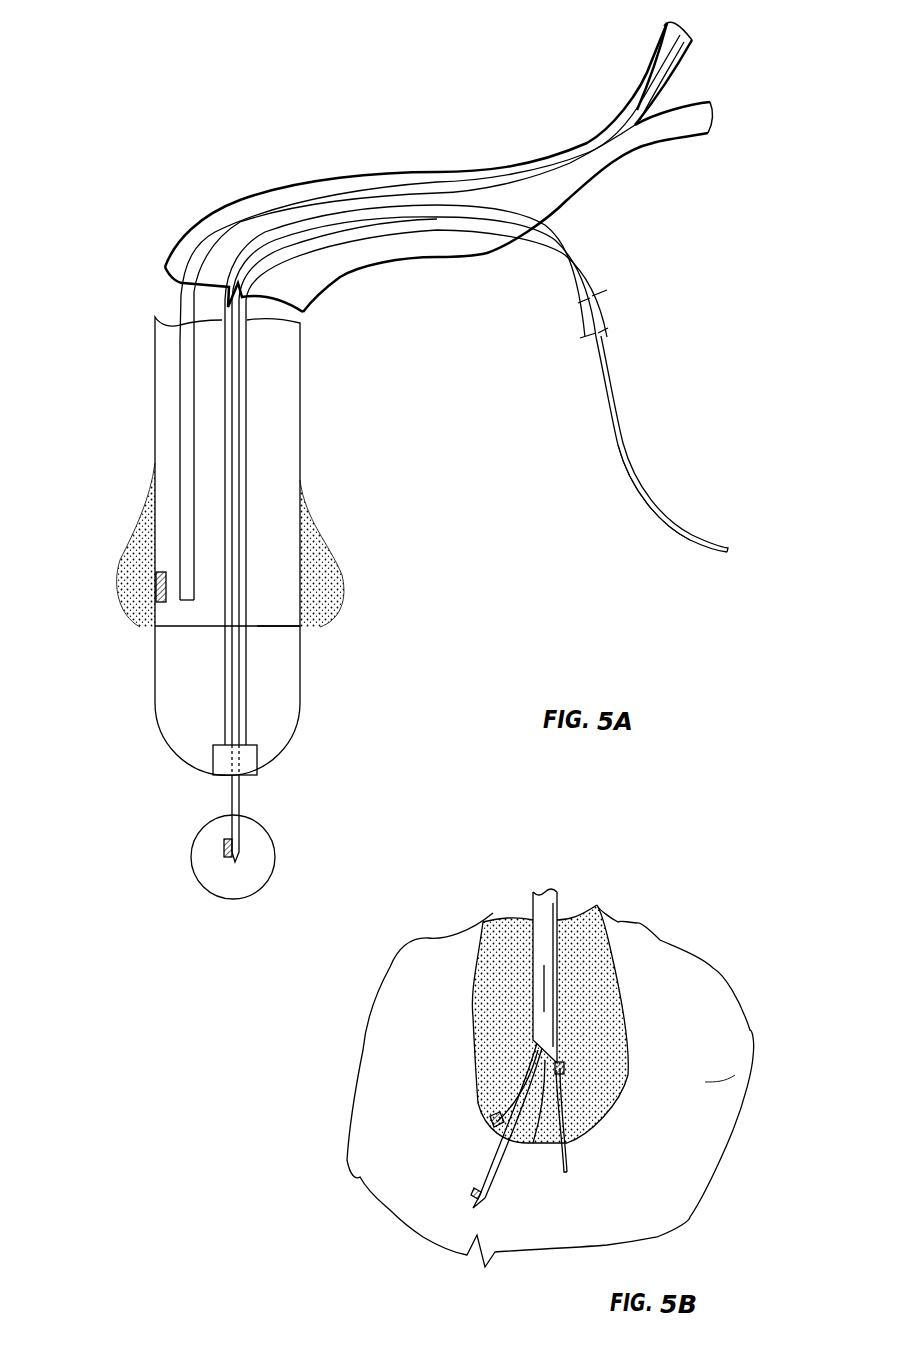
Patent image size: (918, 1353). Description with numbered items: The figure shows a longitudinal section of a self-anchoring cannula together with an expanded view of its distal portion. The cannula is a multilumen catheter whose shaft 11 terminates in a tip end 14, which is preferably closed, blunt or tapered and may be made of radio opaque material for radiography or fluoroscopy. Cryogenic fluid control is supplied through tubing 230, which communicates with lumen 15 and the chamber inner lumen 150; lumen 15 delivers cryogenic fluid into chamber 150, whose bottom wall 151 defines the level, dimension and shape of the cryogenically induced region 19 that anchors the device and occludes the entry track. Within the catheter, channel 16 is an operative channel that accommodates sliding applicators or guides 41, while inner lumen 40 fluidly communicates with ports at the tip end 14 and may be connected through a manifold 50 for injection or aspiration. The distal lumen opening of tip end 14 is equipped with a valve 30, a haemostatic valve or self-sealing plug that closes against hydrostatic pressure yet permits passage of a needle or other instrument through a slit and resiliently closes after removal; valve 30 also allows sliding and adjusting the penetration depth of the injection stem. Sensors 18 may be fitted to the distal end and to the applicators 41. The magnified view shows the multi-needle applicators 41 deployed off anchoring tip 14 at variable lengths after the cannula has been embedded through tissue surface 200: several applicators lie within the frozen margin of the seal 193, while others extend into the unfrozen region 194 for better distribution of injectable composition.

In FIG. 5A, the shaft 11 is at (154, 398).
In FIG. 5A, the tip end 14 is at (190, 718).
In FIG. 5A, the lumen 15 is at (178, 454).
In FIG. 5A, the operative channel 16 is at (247, 480).
In FIG. 5A, the sensors 18 is at (154, 594).
In FIG. 5B, the sensors 18 is at (542, 1058).
In FIG. 5A, the cryogenically induced region 19 is at (126, 561).
In FIG. 5A, the valve 30 is at (605, 320).
In FIG. 5A, the inner lumen 40 is at (607, 365).
In FIG. 5A, the applicators 41 is at (207, 855).
In FIG. 5A, the manifold 50 is at (618, 442).
In FIG. 5A, the inner lumen 150 is at (667, 143).
In FIG. 5A, the bottom wall 151 is at (270, 628).
In FIG. 5B, the seal 193 is at (600, 985).
In FIG. 5B, the unfrozen region 194 is at (705, 1082).
In FIG. 5B, the tissue surface 200 is at (468, 932).
In FIG. 5A, the tubing 230 is at (564, 147).